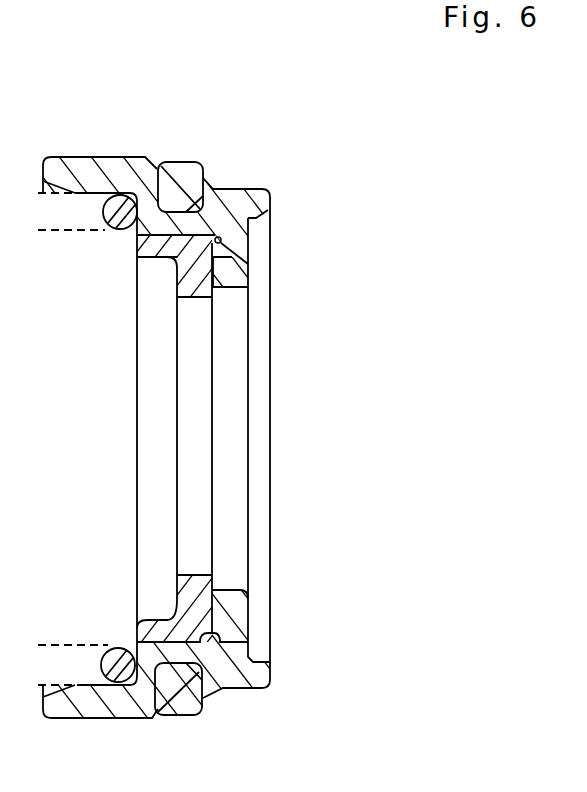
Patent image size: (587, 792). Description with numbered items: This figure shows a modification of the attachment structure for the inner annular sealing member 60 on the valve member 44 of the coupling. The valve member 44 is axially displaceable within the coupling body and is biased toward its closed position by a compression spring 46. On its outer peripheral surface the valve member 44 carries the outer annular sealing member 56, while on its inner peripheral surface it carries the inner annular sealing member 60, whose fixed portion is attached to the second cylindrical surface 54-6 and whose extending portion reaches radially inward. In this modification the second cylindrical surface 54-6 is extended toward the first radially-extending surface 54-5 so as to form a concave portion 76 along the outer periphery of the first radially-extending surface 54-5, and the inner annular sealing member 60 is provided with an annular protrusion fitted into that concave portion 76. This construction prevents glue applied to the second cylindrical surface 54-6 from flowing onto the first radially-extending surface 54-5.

The valve member 44 is at (120, 158).
The outer annular sealing member 56 is at (182, 182).
The concave portion 76 is at (221, 237).
The compression spring 46 is at (104, 212).
The inner annular sealing member 60 is at (198, 266).
The first radially-extending surface 54-5 is at (213, 243).
The second cylindrical surface 54-6 is at (160, 237).